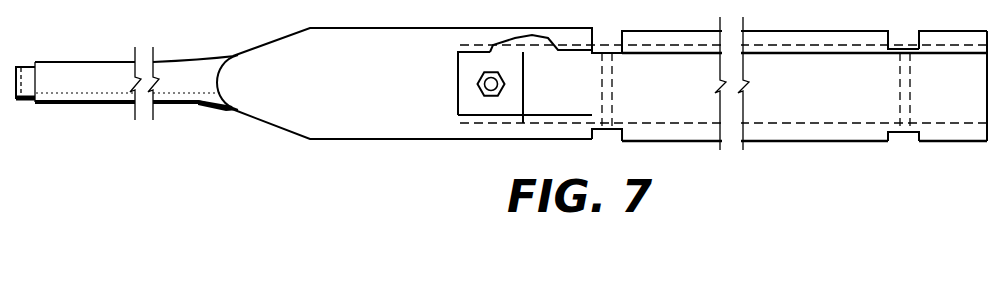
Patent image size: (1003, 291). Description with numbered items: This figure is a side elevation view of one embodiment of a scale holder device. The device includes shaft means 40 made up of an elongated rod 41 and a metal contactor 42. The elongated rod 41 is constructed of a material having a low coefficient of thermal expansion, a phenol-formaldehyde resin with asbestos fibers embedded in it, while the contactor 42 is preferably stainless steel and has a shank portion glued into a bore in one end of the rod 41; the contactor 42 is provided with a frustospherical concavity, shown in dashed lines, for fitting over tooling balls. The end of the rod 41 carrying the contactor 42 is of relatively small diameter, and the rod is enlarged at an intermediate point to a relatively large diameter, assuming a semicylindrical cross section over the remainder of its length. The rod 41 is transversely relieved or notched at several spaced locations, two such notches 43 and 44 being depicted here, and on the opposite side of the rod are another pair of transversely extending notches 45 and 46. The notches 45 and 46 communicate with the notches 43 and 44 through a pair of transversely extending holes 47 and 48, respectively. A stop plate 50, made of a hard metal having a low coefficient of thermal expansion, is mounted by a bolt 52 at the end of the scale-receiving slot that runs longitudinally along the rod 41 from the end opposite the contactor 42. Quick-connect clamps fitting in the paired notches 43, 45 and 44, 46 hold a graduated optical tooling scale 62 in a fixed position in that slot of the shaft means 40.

The shaft means 40 is at (371, 29).
The elongated rod 41 is at (115, 107).
The metal contactor 42 is at (25, 63).
The notch 43 is at (605, 37).
The notch 44 is at (903, 35).
The notch 45 is at (607, 138).
The notch 46 is at (903, 138).
The transversely extending hole 47 is at (613, 91).
The transversely extending hole 48 is at (912, 92).
The stop plate 50 is at (491, 110).
The bolt 52 is at (488, 72).
The graduated optical tooling scale 62 is at (824, 96).